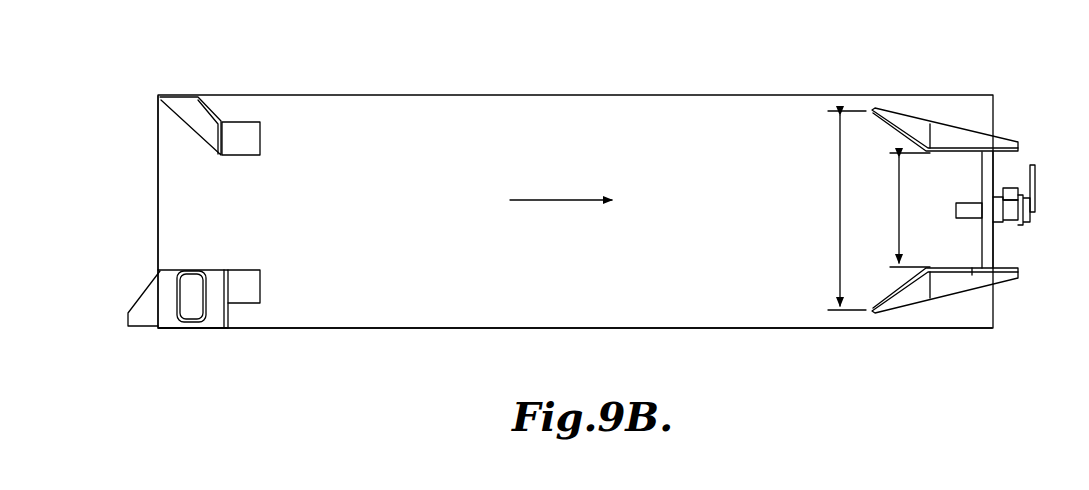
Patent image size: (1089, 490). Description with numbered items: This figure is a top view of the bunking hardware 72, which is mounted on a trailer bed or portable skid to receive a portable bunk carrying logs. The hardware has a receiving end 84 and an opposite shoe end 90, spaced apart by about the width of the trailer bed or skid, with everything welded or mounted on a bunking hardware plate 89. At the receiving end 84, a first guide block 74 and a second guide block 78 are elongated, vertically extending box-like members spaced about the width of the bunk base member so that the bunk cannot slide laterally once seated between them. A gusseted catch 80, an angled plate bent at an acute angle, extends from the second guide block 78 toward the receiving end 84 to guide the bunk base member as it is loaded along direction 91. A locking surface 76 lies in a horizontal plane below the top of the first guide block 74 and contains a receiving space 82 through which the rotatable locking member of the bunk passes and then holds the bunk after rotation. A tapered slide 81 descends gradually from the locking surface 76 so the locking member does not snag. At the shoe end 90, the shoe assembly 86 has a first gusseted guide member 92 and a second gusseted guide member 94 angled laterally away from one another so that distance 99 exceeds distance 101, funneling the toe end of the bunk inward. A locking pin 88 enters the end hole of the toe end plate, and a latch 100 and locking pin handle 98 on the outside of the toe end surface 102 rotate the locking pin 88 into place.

The bunking hardware 72 is at (124, 140).
The first guide block 74 is at (250, 296).
The locking surface 76 is at (210, 320).
The second guide block 78 is at (238, 130).
The gusseted catch 80 is at (197, 112).
The slide 81 is at (136, 332).
The receiving space 82 is at (190, 306).
The receiving end 84 is at (176, 197).
The shoe assembly 86 is at (1028, 120).
The locking pin 88 is at (965, 216).
The bunking hardware plate 89 is at (617, 333).
The shoe end 90 is at (968, 178).
The direction 91 is at (543, 200).
The first gusseted guide member 92 is at (918, 296).
The second gusseted guide member 94 is at (917, 118).
The locking pin handle 98 is at (1036, 180).
The distance 99 is at (843, 196).
The latch 100 is at (1010, 192).
The distance 101 is at (900, 207).
The toe end surface 102 is at (973, 262).